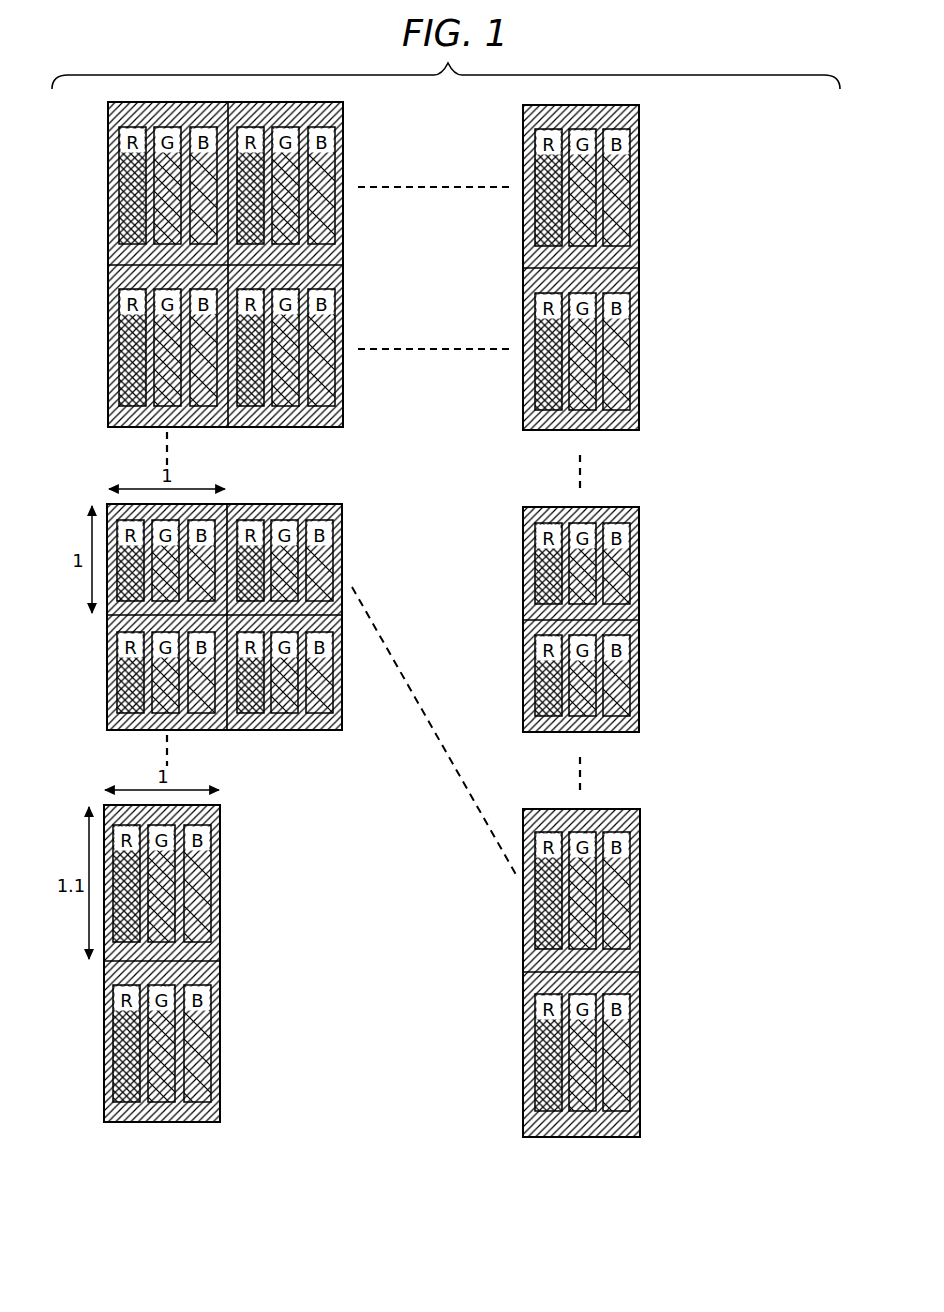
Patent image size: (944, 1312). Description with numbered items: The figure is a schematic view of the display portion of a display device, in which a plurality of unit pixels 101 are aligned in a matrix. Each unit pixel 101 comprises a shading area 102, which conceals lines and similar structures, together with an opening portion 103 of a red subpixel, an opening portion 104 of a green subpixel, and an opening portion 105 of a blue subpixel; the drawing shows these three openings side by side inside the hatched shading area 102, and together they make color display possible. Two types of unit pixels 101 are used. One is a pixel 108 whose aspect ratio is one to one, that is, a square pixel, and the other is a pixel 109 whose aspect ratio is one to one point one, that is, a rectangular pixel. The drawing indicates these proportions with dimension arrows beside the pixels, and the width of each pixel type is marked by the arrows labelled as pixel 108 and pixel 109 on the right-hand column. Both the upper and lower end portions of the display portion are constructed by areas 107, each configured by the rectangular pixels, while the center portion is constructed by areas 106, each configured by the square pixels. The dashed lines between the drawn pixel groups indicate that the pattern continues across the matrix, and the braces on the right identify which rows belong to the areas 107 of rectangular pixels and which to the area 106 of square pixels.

The unit pixel 101 is at (107, 676).
The shading area 102 is at (192, 983).
The opening portion of a red subpixel 103 is at (126, 1097).
The opening portion of a green subpixel 104 is at (160, 1097).
The opening portion of a blue subpixel 105 is at (197, 1097).
The area configured by square pixels 106 is at (647, 507).
The area configured by rectangular pixels 107 is at (655, 1137).
The square pixel 108 is at (641, 523).
The rectangular pixel 109 is at (641, 128).